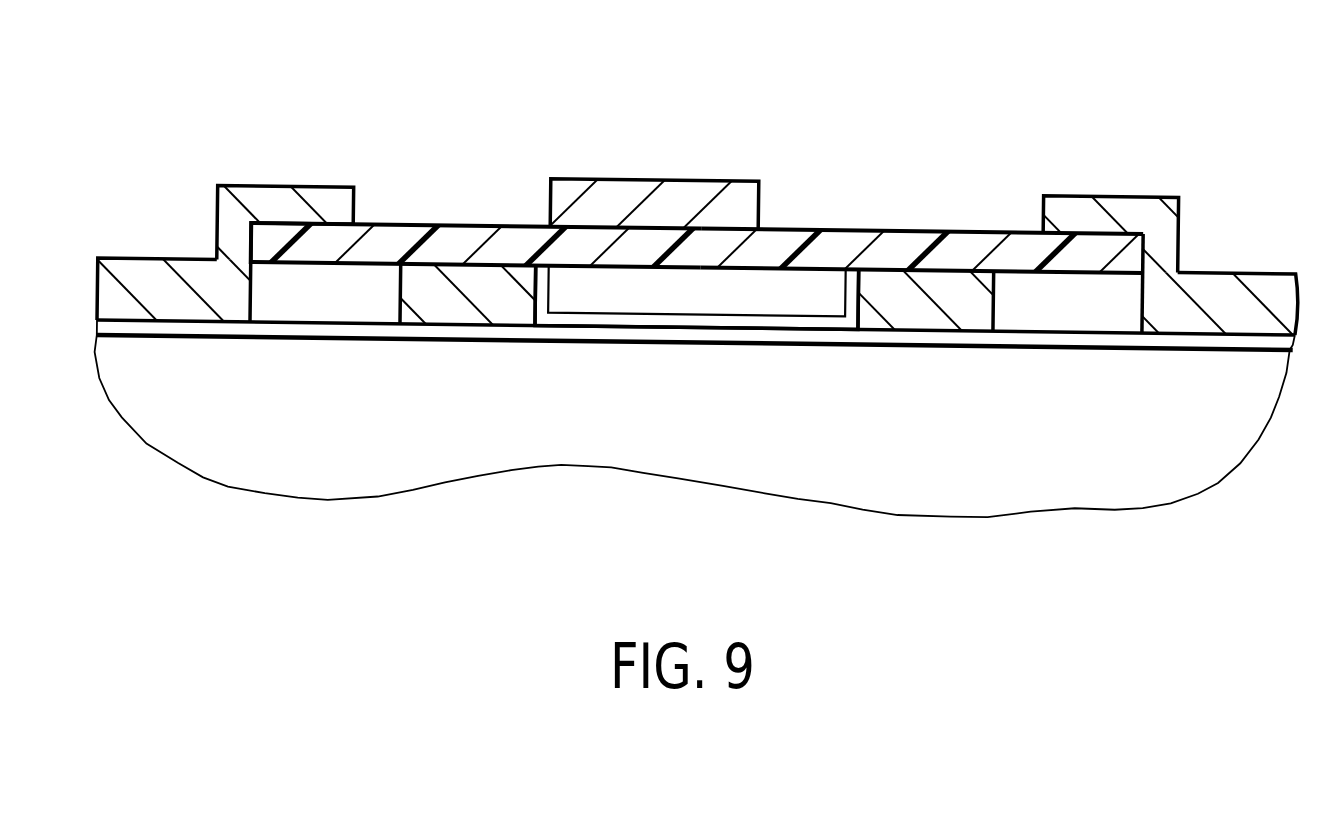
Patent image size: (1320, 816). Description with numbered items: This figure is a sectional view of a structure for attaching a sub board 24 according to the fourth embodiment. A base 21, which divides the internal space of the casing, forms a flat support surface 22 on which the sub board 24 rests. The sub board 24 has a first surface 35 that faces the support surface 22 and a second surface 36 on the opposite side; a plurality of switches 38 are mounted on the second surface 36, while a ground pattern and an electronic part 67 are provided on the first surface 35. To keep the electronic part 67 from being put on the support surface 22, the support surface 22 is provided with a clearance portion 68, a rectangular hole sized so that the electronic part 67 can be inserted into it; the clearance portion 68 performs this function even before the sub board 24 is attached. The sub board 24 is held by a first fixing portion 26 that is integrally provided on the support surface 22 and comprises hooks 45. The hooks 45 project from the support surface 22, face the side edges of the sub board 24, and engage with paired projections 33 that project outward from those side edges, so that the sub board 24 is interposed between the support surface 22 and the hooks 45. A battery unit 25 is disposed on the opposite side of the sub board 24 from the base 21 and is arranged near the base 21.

The base 21 is at (143, 277).
The support surface 22 is at (948, 268).
The sub board 24 is at (410, 245).
The battery unit 25 is at (868, 478).
The first fixing portion 26 is at (248, 162).
The projections 33 is at (288, 262).
The first surface 35 is at (1017, 273).
The second surface 36 is at (901, 233).
The switches 38 is at (572, 178).
The hooks 45 is at (308, 184).
The electronic part 67 is at (733, 288).
The clearance portion 68 is at (537, 285).